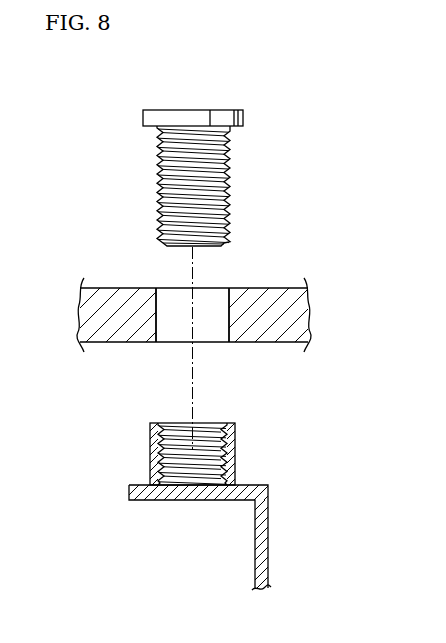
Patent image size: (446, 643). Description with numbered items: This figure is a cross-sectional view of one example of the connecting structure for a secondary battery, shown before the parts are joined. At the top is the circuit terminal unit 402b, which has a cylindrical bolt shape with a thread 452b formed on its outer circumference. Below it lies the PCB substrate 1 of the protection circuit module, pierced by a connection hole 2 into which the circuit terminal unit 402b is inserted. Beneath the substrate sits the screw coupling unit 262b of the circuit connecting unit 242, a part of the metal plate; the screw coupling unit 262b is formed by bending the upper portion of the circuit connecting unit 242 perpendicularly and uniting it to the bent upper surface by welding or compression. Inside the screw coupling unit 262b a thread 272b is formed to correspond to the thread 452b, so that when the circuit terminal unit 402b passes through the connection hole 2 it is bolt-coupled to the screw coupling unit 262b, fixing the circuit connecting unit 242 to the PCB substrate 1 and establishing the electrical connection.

The circuit terminal unit 402b is at (252, 114).
The thread 452b is at (230, 167).
The PCB substrate 1 is at (291, 296).
The connection hole 2 is at (212, 328).
The screw coupling unit 262b is at (235, 443).
The thread 272b is at (167, 450).
The circuit connecting unit 242 is at (268, 527).